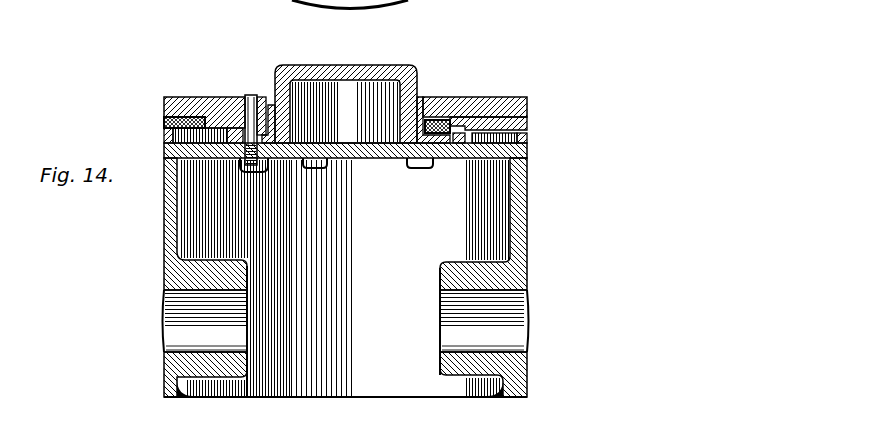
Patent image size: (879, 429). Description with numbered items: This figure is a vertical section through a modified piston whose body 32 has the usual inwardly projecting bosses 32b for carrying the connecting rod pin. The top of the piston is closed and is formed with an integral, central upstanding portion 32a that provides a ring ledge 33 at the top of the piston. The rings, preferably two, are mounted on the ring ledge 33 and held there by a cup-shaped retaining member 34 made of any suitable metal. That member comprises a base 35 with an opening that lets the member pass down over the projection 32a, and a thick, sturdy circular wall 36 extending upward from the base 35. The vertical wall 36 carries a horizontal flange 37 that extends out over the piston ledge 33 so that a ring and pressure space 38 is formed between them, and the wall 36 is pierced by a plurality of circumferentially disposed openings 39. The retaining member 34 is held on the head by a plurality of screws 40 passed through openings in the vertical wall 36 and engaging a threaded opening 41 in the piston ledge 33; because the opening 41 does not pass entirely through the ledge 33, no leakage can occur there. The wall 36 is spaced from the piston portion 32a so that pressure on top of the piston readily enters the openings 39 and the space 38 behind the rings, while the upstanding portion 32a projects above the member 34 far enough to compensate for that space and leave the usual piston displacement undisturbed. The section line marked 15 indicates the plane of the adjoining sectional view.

The section line indicator (FIG. 15) 15 is at (163, 115).
The body 32 is at (325, 277).
The upstanding portion 32a is at (343, 66).
The bosses with bores 32b is at (546, 262).
The ring ledge 33 is at (168, 158).
The cup-shaped retaining member 34 is at (194, 88).
The base 35 is at (424, 97).
The circular wall 36 is at (270, 106).
The horizontal flange 37 is at (189, 96).
The ring and pressure space 38 is at (248, 95).
The openings 39 is at (458, 115).
The screws 40 is at (260, 97).
The threaded opening 41 is at (268, 168).